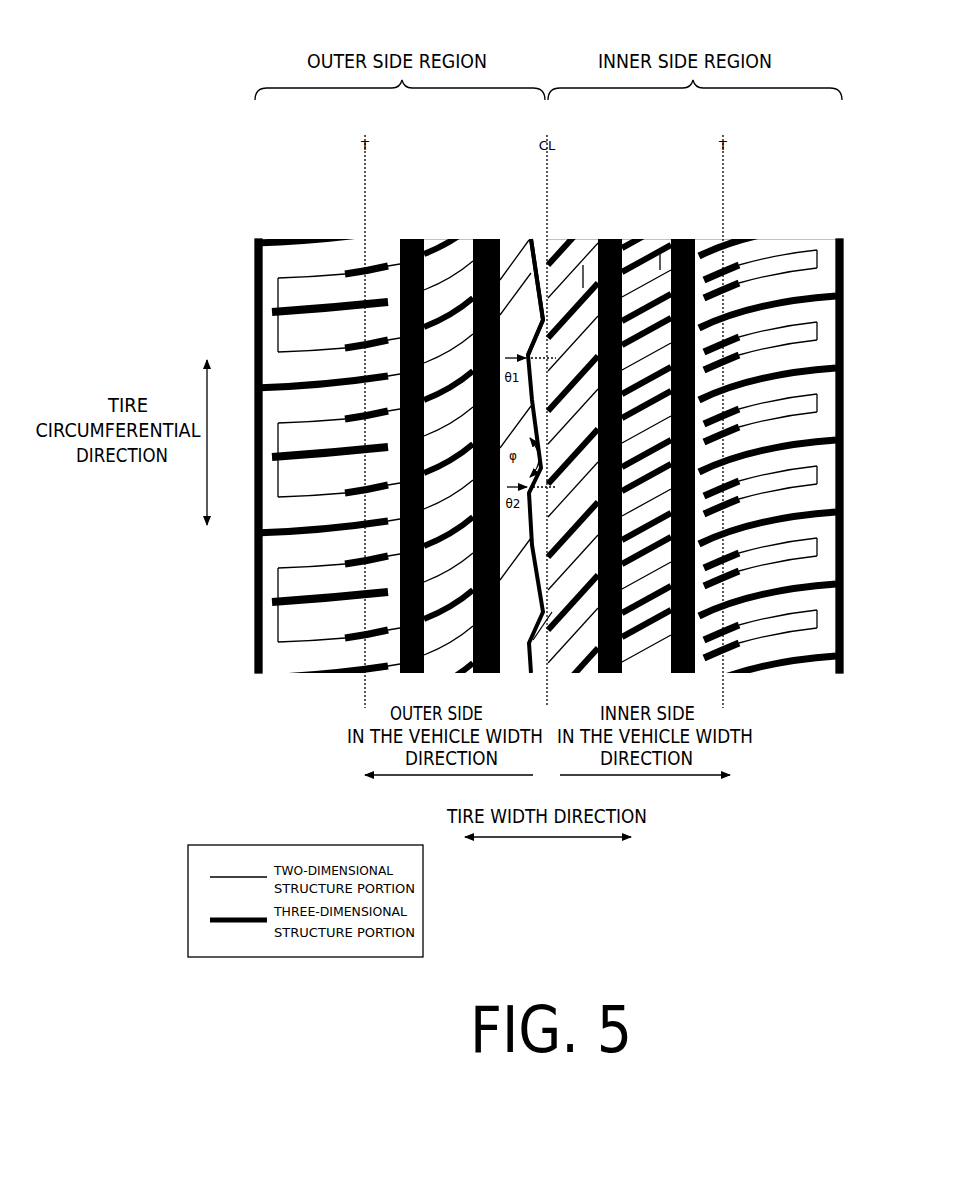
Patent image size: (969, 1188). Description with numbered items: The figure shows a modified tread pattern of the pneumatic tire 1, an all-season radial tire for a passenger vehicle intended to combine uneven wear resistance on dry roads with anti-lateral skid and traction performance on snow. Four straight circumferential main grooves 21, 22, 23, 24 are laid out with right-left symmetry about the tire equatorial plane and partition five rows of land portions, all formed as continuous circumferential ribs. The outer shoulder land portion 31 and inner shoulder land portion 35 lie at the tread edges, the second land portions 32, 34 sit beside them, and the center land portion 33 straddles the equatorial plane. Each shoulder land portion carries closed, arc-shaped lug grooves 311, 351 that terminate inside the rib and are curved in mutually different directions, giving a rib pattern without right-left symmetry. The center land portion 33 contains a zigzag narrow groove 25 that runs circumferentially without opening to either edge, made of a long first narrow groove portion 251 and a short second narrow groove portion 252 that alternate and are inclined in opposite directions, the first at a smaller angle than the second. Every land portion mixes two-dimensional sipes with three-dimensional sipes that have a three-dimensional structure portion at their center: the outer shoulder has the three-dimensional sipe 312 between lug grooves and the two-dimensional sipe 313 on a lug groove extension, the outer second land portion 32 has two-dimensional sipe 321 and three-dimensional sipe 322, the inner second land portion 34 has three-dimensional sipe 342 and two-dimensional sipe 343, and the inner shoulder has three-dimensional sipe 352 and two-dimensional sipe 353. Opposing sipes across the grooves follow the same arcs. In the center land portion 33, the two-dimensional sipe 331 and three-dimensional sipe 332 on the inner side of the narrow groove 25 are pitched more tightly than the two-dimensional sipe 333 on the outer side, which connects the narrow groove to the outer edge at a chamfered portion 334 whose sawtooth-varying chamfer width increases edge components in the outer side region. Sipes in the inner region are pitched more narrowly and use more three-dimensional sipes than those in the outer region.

The pneumatic tire 1 is at (800, 46).
The circumferential main groove 21 is at (410, 237).
The circumferential main groove 22 is at (484, 232).
The circumferential main groove 23 is at (615, 235).
The circumferential main groove 24 is at (695, 238).
The narrow groove 25 is at (532, 238).
The first narrow groove portion 251 is at (528, 292).
The second narrow groove portion 252 is at (536, 348).
The shoulder land portion 31 is at (321, 219).
The lug groove 311 is at (310, 305).
The three-dimensional sipe 312 is at (330, 277).
The two-dimensional sipe 313 is at (397, 287).
The second land portion 32 is at (426, 204).
The two-dimensional sipe 321 is at (463, 258).
The three-dimensional sipe 322 is at (455, 298).
The center land portion 33 is at (561, 225).
The two-dimensional sipe 331 is at (583, 265).
The three-dimensional sipe 332 is at (586, 262).
The two-dimensional sipe 333 is at (513, 277).
The chamfered portion 334 is at (533, 640).
The second land portion 34 is at (633, 232).
The three-dimensional sipe 342 is at (653, 248).
The two-dimensional sipe 343 is at (665, 230).
The shoulder land portion 35 is at (741, 225).
The lug groove 351 is at (822, 270).
The three-dimensional sipe 352 is at (768, 253).
The two-dimensional sipe 353 is at (702, 317).